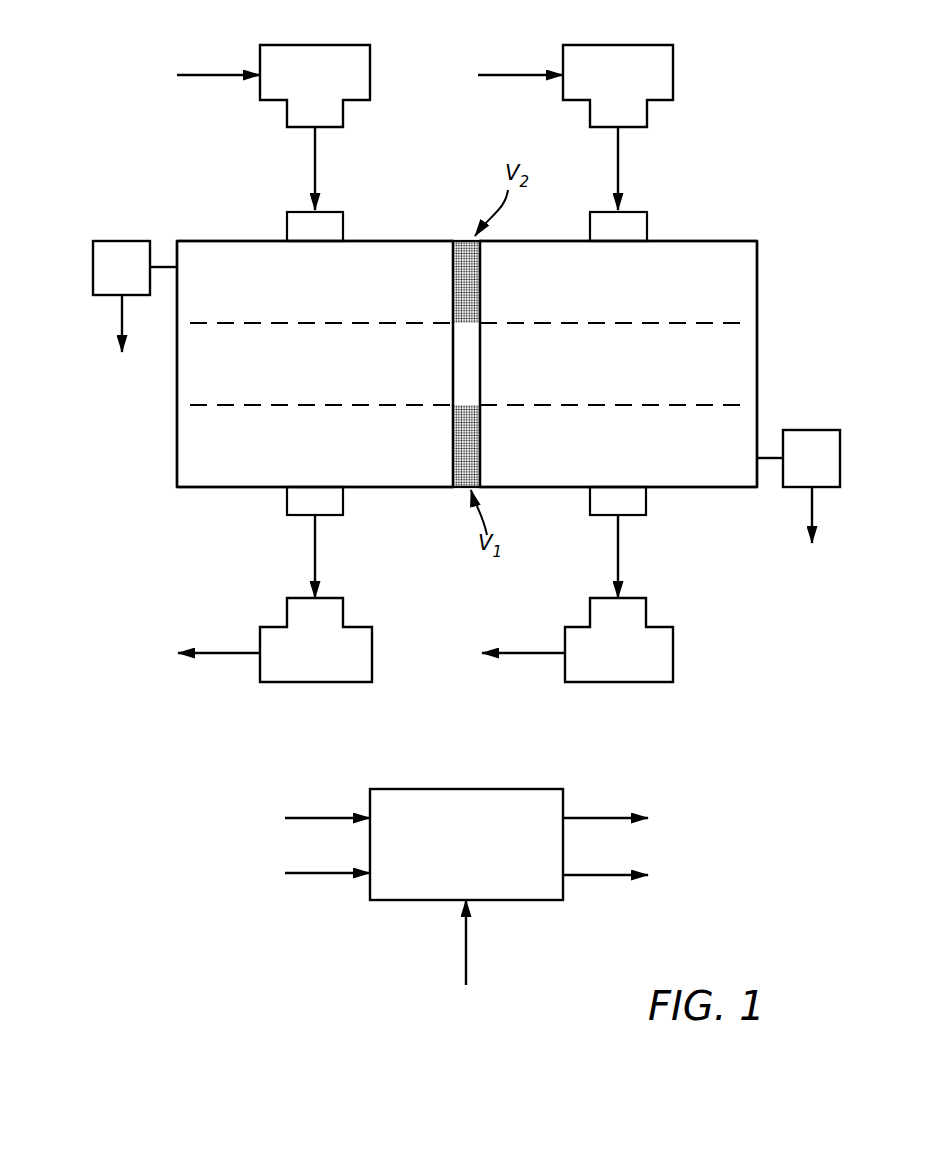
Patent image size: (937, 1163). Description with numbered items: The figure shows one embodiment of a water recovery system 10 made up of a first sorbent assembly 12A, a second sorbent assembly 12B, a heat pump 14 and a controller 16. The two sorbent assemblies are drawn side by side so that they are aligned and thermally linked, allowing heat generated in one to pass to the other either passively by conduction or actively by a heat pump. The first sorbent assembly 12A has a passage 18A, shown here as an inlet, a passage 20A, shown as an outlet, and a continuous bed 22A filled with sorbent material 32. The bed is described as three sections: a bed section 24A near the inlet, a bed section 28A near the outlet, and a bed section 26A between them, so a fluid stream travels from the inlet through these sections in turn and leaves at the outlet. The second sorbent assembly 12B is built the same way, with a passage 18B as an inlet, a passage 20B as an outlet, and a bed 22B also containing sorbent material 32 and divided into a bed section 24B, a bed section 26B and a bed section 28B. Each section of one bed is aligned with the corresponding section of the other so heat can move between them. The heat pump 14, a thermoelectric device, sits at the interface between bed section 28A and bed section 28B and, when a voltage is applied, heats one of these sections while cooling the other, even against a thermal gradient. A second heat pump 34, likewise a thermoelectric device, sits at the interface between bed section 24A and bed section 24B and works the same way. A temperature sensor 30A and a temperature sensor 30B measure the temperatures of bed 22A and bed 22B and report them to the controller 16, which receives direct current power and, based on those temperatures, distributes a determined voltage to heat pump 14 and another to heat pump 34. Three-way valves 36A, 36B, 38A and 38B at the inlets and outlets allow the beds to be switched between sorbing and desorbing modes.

The water recovery system 10 is at (760, 66).
The first sorbent assembly 12A is at (180, 218).
The second sorbent assembly 12B is at (717, 495).
The heat pump 14 is at (461, 489).
The controller 16 is at (453, 889).
The passage 18A is at (327, 221).
The passage 18B is at (632, 232).
The passage 20A is at (297, 500).
The passage 20B is at (605, 500).
The bed 22A is at (177, 403).
The bed 22B is at (757, 372).
The bed section 24A is at (233, 274).
The bed section 24B is at (741, 276).
The bed section 26A is at (233, 359).
The bed section 26B is at (741, 357).
The bed section 28A is at (233, 441).
The bed section 28B is at (741, 441).
The temperature sensor 30A is at (100, 276).
The temperature sensor 30B is at (790, 471).
The sorbent material 32 is at (280, 287).
The heat pump 34 is at (462, 243).
The three-way valve 36A is at (293, 84).
The three-way valve 36B is at (596, 84).
The three-way valve 38A is at (294, 662).
The three-way valve 38B is at (597, 662).